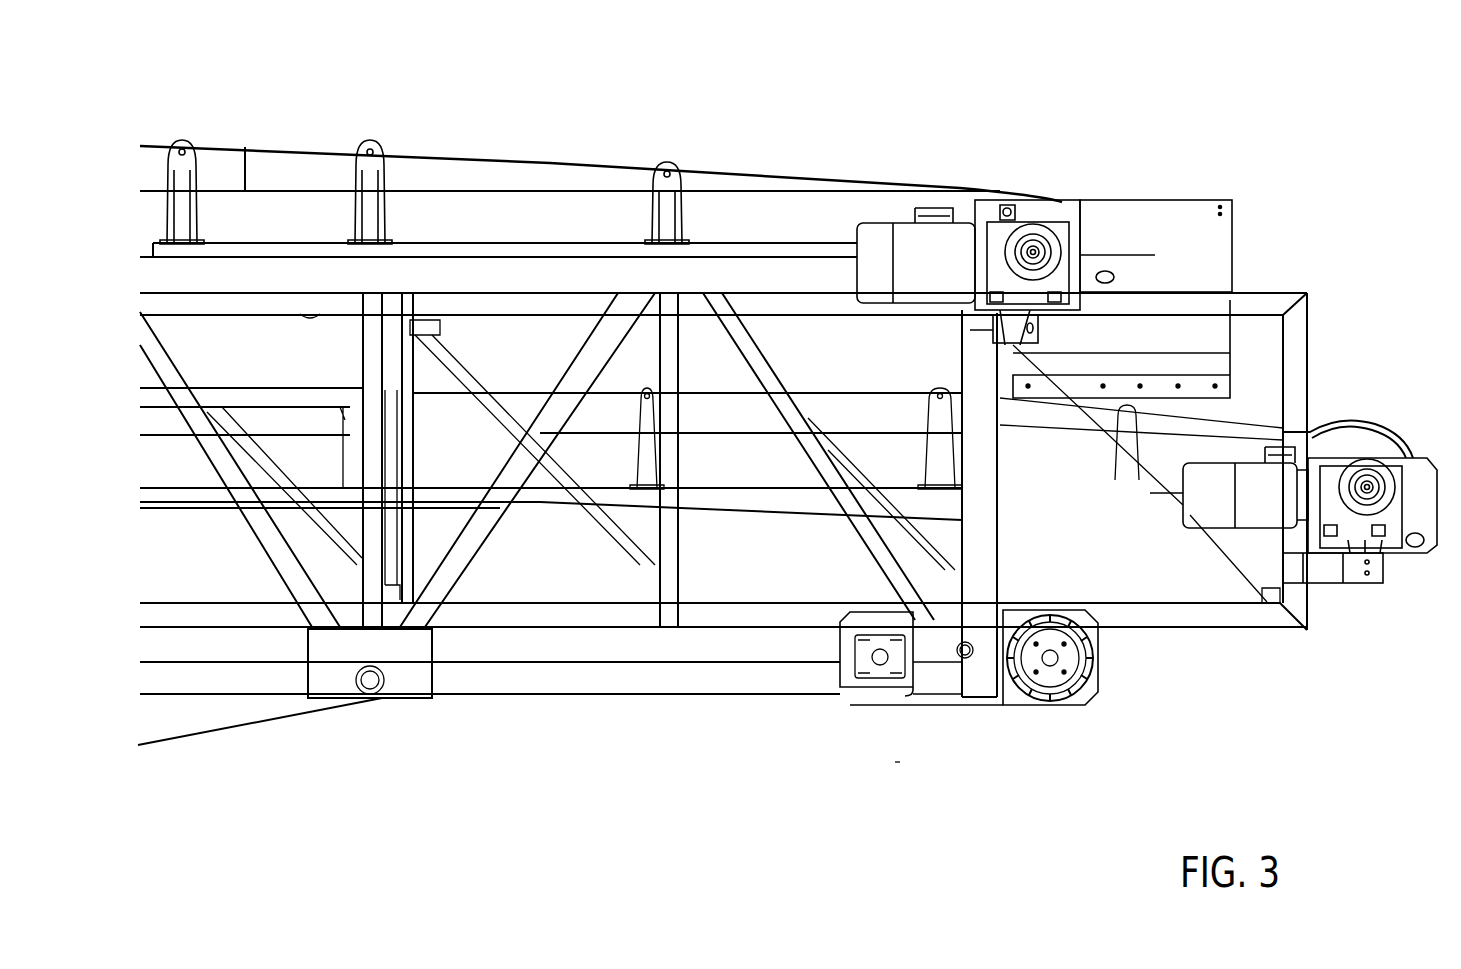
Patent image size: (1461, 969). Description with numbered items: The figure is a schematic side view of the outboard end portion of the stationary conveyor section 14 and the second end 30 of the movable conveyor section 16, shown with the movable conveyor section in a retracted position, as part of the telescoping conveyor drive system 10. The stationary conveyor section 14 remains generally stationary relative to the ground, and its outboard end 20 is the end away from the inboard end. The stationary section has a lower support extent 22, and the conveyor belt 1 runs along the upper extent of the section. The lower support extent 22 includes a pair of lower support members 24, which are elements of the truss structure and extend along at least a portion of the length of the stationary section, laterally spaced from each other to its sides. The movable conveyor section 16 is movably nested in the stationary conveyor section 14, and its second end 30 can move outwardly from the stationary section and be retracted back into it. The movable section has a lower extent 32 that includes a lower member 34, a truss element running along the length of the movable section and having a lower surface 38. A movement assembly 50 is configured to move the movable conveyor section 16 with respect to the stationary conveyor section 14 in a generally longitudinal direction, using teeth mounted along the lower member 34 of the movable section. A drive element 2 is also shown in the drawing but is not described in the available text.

The conveyor belt 1 is at (575, 163).
The belt drive section 2 is at (1313, 430).
The telescoping conveyor drive system 10 is at (1010, 788).
The stationary conveyor section 14 is at (519, 110).
The movable conveyor section 16 is at (1271, 240).
The outboard end 20 is at (983, 688).
The lower support extent 22 is at (676, 683).
The lower support members 24 is at (542, 652).
The second end 30 is at (1401, 642).
The lower extent 32 is at (1276, 637).
The lower member 34 is at (1160, 620).
The lower surface 38 is at (1195, 633).
The movement assembly 50 is at (1091, 725).